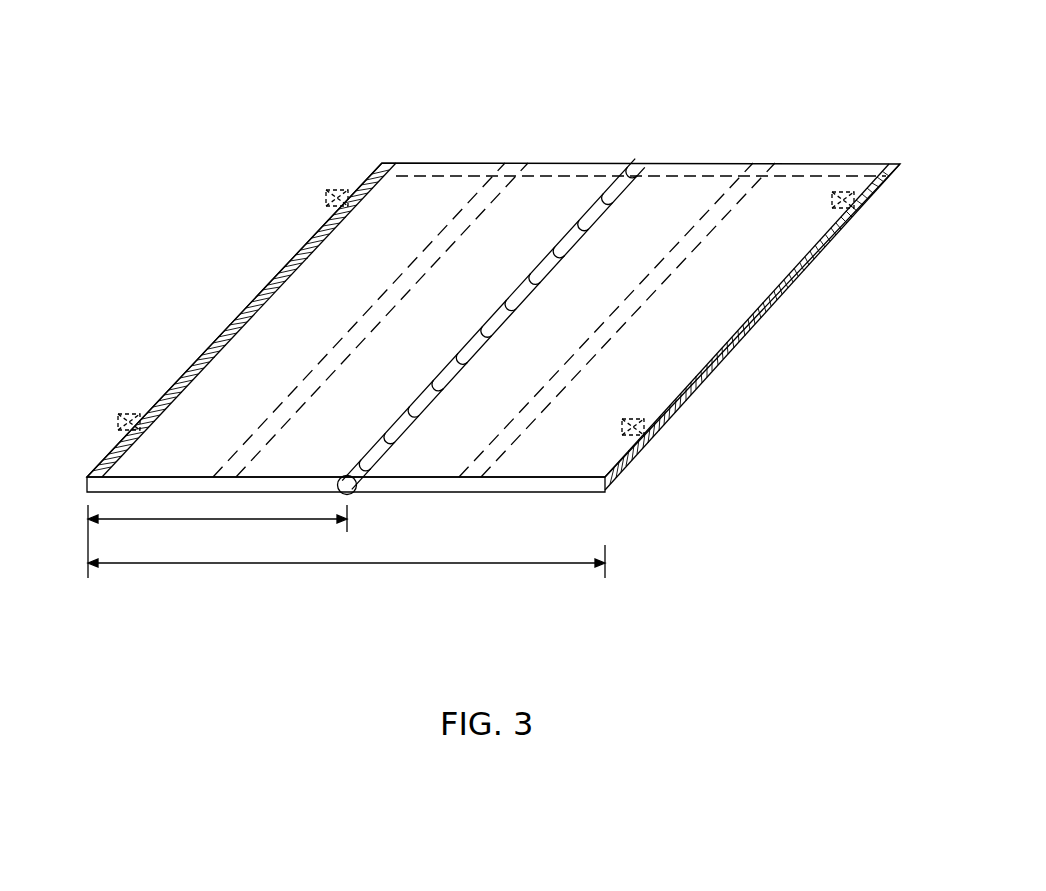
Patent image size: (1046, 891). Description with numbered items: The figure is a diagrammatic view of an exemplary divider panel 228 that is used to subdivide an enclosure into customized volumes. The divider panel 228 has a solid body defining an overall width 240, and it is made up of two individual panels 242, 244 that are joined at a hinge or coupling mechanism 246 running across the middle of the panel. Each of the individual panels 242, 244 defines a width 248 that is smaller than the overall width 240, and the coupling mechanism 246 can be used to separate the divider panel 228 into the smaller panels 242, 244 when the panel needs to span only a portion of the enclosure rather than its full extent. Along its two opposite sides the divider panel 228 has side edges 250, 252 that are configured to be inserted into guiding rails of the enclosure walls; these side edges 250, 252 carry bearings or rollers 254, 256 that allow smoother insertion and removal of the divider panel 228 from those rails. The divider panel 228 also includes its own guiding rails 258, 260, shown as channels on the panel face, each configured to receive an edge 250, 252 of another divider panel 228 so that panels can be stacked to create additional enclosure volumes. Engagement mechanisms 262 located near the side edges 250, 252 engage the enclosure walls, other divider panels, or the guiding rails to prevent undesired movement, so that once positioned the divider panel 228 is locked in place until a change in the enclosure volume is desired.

The divider panel 228 is at (781, 130).
The width 240 is at (346, 564).
The individual panel 242 is at (411, 192).
The individual panel 244 is at (800, 183).
The hinge or coupling mechanism 246 is at (641, 163).
The width 248 is at (224, 520).
The side edge 250 is at (207, 348).
The side edge 252 is at (611, 489).
The bearings or rollers 254 is at (258, 300).
The bearings or rollers 256 is at (714, 369).
The guiding rail 258 is at (506, 185).
The guiding rail 260 is at (643, 303).
The engagement mechanism 262 is at (340, 190).